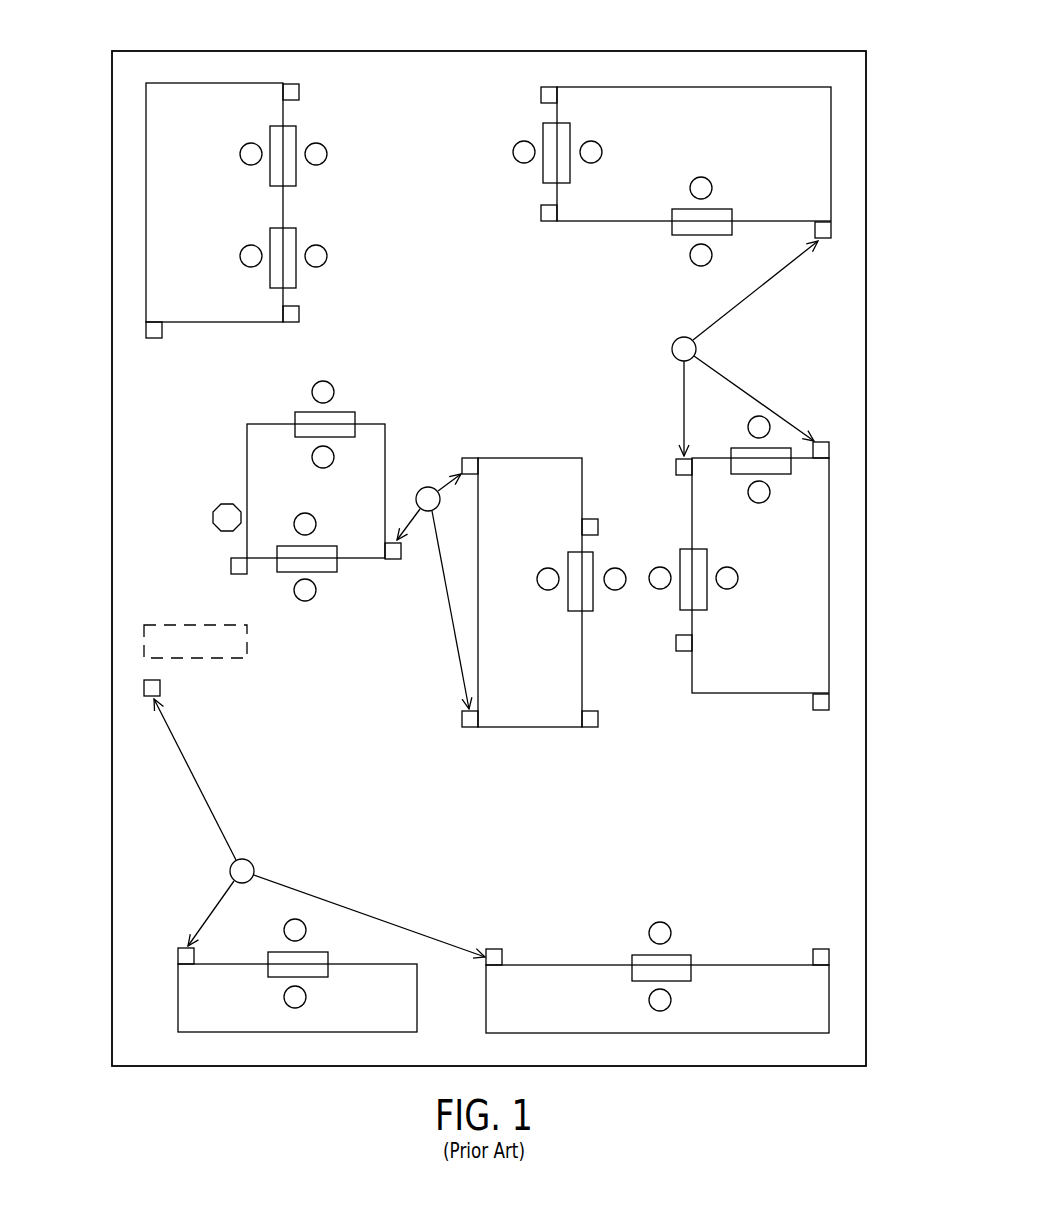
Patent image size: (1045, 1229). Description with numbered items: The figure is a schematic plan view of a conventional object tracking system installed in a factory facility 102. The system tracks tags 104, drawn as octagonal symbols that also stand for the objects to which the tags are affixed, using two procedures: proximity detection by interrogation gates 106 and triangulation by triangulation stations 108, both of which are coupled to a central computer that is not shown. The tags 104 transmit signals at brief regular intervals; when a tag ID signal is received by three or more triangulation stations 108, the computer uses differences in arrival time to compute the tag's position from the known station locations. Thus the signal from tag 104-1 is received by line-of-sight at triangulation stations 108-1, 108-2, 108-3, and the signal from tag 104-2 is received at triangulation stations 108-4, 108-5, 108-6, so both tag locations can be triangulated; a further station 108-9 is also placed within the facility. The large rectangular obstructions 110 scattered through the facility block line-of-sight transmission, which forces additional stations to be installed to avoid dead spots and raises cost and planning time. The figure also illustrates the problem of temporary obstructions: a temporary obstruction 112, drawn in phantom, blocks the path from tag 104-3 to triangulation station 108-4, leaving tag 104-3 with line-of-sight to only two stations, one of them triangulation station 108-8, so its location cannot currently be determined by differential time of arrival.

The factory facility 102 is at (600, 50).
The tag 104 is at (418, 492).
The tag 104-1 is at (676, 340).
The tag 104-2 is at (251, 860).
The tag 104-3 is at (226, 503).
The interrogation gate 106 is at (263, 235).
The triangulation station 108 is at (300, 96).
The triangulation station 108-1 is at (831, 230).
The triangulation station 108-2 is at (831, 450).
The triangulation station 108-3 is at (680, 455).
The triangulation station 108-4 is at (162, 686).
The triangulation station 108-5 is at (492, 948).
The triangulation station 108-6 is at (177, 954).
The triangulation station 108-8 is at (239, 575).
The triangulation station 108-9 is at (163, 330).
The obstruction 110 is at (284, 204).
The temporary obstruction 112 is at (190, 625).